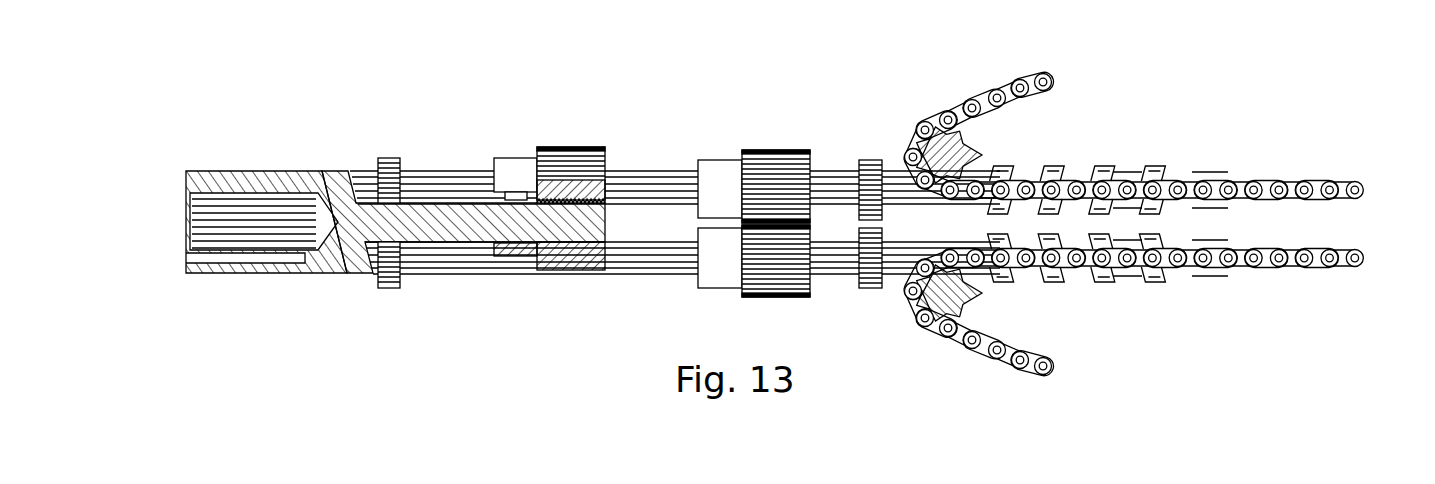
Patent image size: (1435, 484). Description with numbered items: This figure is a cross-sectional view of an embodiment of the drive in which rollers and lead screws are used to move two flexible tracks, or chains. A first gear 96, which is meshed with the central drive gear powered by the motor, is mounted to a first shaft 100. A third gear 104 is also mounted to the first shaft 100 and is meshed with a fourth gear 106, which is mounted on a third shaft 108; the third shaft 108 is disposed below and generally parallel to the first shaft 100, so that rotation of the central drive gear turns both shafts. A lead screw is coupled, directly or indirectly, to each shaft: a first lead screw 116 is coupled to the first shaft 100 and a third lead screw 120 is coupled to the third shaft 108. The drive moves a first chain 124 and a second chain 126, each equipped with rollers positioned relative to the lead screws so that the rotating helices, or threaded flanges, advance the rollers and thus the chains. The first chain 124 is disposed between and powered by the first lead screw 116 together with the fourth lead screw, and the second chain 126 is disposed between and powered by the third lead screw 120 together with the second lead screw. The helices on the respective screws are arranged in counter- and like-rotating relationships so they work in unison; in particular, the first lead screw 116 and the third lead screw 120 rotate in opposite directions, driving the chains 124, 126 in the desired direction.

The first gear 96 is at (571, 148).
The first shaft 100 is at (657, 193).
The third gear 104 is at (777, 150).
The fourth gear 106 is at (777, 299).
The third shaft 108 is at (823, 272).
The first lead screw 116 is at (1149, 172).
The third lead screw 120 is at (1120, 283).
The first chain 124 is at (1040, 98).
The second chain 126 is at (980, 352).